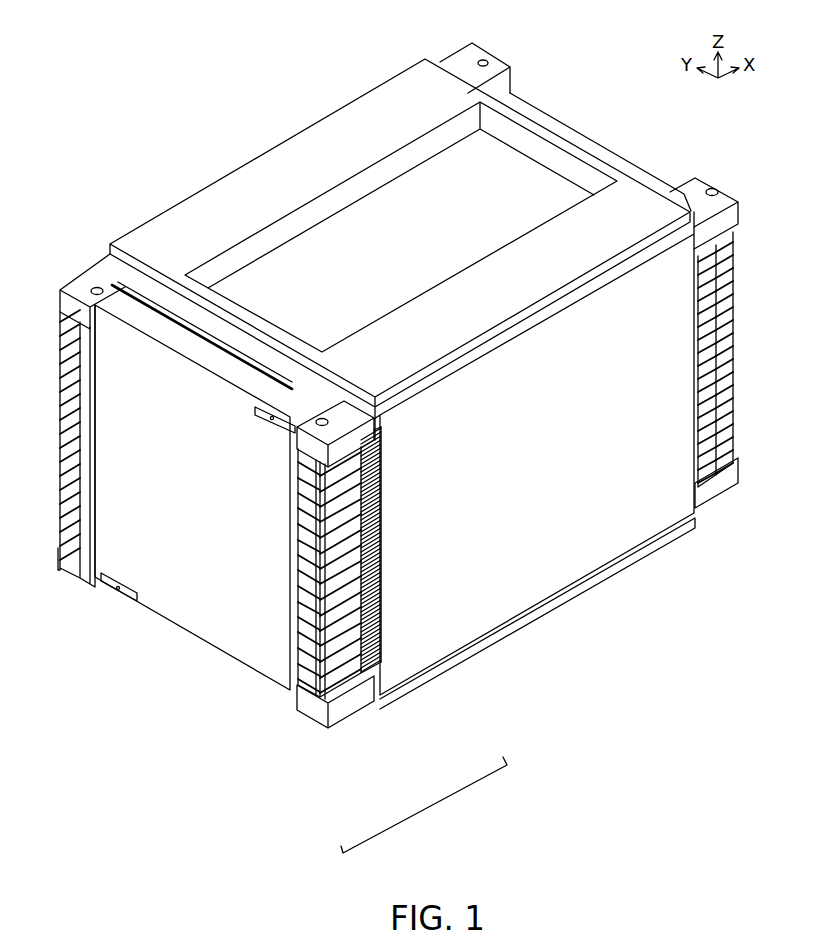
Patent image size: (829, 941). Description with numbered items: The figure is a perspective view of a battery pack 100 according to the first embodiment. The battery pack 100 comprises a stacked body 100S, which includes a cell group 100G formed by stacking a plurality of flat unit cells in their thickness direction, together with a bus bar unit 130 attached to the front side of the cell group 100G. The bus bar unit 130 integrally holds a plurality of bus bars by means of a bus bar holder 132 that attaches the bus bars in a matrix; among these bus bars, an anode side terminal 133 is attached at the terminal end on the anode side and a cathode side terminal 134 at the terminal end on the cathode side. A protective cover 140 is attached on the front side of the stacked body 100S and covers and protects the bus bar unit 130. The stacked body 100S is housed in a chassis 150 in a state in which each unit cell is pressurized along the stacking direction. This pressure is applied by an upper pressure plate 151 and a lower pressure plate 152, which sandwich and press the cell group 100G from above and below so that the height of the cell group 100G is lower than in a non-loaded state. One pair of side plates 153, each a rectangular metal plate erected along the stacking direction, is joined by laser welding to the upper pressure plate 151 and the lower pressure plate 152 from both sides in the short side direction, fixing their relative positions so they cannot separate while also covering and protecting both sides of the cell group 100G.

The battery pack 100 is at (389, 440).
The chassis 150 is at (399, 403).
The upper pressure plate 151 is at (283, 153).
The lower pressure plate 152 is at (330, 713).
The side plate 153 is at (623, 551).
The bus bar unit 130 is at (219, 562).
The bus bar holder 132 is at (297, 544).
The anode side terminal 133 is at (228, 643).
The cathode side terminal 134 is at (120, 601).
The protective cover 140 is at (262, 418).
The cell group 100G is at (343, 577).
The stacked body 100S is at (424, 805).